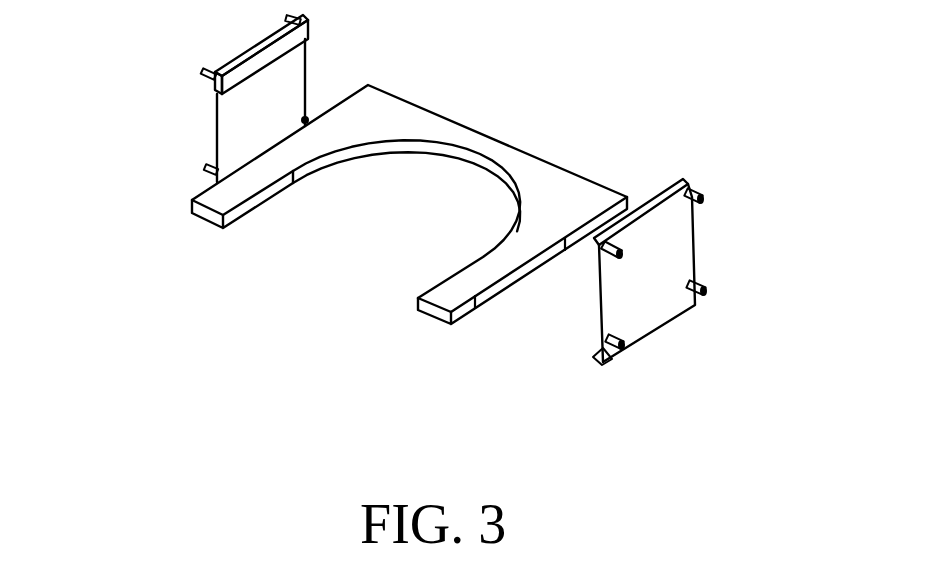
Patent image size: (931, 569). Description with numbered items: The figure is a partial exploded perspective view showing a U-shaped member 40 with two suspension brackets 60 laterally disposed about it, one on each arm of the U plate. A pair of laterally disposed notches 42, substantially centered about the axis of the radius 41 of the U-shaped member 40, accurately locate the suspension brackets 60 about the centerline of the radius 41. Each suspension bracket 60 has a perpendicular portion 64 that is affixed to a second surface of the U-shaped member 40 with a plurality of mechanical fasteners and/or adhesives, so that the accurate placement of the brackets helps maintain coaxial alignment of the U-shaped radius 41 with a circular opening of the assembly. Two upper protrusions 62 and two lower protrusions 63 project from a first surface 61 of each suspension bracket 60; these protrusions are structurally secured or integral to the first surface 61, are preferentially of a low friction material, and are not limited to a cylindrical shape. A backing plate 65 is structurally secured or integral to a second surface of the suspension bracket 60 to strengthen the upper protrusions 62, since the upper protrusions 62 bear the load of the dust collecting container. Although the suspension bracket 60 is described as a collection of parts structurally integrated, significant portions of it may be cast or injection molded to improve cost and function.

The U-shaped member 40 is at (513, 140).
The radius 41 is at (468, 168).
The notches 42 is at (262, 157).
The suspension bracket 60 is at (442, 225).
The first surface 61 is at (657, 282).
The upper protrusions 62 is at (617, 238).
The lower protrusions 63 is at (707, 289).
The perpendicular portion 64 is at (600, 363).
The backing plate 65 is at (309, 30).